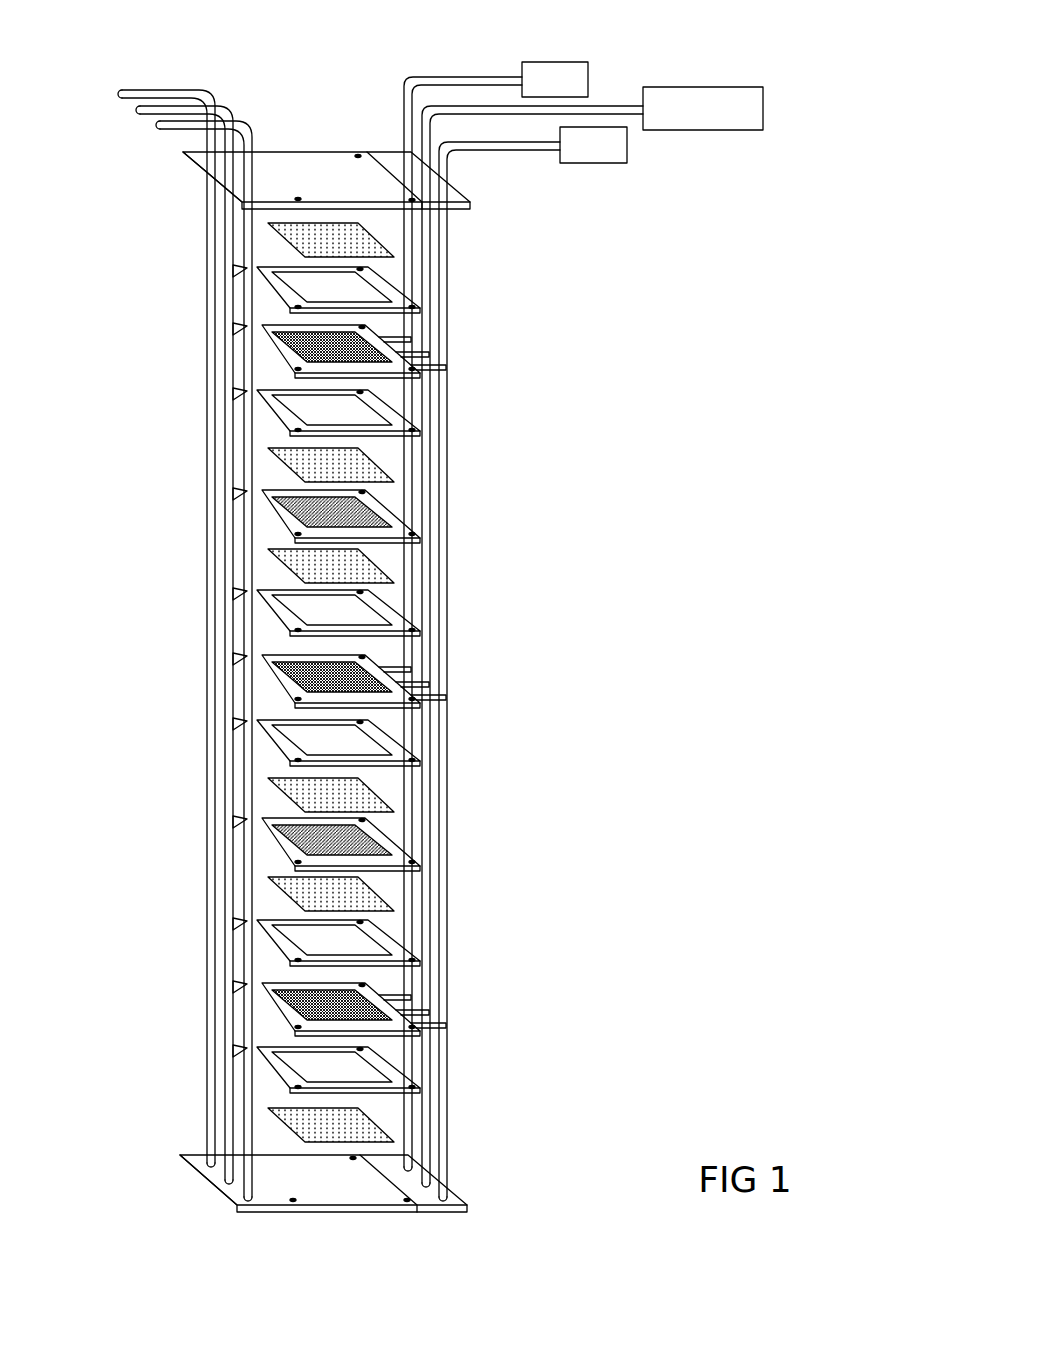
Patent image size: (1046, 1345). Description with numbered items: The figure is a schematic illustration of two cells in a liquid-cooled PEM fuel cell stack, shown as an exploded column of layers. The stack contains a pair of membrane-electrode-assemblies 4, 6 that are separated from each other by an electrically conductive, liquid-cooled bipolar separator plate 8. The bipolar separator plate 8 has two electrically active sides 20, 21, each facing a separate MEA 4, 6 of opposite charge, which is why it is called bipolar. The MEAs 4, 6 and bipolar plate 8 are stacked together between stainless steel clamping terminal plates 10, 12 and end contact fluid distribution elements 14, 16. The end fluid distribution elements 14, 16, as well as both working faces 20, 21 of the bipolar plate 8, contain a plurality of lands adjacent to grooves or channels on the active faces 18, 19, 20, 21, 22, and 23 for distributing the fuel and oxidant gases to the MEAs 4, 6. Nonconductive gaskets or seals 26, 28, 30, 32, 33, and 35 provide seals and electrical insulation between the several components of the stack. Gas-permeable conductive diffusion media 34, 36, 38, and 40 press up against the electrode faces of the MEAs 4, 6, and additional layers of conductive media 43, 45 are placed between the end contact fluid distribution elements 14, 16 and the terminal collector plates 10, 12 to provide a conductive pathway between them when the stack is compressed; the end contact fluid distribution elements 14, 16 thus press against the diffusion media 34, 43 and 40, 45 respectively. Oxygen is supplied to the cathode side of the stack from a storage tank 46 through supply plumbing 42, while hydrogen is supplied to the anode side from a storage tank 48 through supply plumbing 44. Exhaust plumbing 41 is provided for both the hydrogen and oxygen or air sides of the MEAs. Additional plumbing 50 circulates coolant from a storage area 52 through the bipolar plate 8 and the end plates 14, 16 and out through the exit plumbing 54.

The membrane-electrode-assembly 4 is at (255, 515).
The membrane-electrode-assembly 6 is at (400, 833).
The bipolar separator plate 8 is at (260, 688).
The clamping terminal plate 10 is at (350, 187).
The clamping terminal plate 12 is at (360, 1197).
The end contact fluid distribution element 14 is at (255, 352).
The end contact fluid distribution element 16 is at (255, 1018).
The active face 18 is at (375, 331).
The active face 19 is at (388, 380).
The electrically active side 20 is at (280, 656).
The electrically active side 21 is at (253, 708).
The active face 22 is at (375, 1000).
The active face 23 is at (258, 1040).
The nonconductive gasket 26 is at (268, 410).
The nonconductive gasket 28 is at (265, 615).
The nonconductive gasket 30 is at (400, 745).
The nonconductive gasket 32 is at (265, 942).
The nonconductive gasket 33 is at (395, 1067).
The gas-permeable conductive diffusion medium 34 is at (272, 458).
The nonconductive gasket 35 is at (275, 290).
The gas-permeable conductive diffusion medium 36 is at (270, 560).
The gas-permeable conductive diffusion medium 38 is at (270, 788).
The gas-permeable conductive diffusion medium 40 is at (270, 888).
The exhaust plumbing 41 is at (177, 90).
The supply plumbing 42 is at (407, 110).
The conductive medium 43 is at (280, 233).
The supply plumbing 44 is at (445, 165).
The conductive medium 45 is at (285, 1122).
The storage tank 46 is at (577, 65).
The storage tank 48 is at (618, 163).
The coolant plumbing 50 is at (607, 108).
The coolant storage area 52 is at (682, 92).
The exit plumbing 54 is at (213, 108).